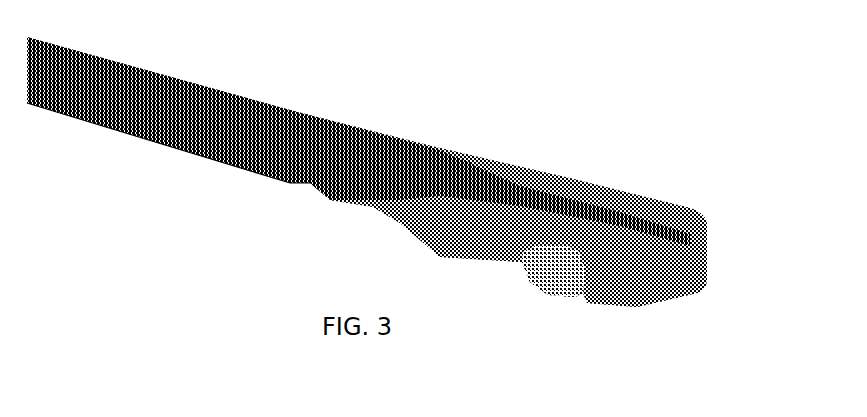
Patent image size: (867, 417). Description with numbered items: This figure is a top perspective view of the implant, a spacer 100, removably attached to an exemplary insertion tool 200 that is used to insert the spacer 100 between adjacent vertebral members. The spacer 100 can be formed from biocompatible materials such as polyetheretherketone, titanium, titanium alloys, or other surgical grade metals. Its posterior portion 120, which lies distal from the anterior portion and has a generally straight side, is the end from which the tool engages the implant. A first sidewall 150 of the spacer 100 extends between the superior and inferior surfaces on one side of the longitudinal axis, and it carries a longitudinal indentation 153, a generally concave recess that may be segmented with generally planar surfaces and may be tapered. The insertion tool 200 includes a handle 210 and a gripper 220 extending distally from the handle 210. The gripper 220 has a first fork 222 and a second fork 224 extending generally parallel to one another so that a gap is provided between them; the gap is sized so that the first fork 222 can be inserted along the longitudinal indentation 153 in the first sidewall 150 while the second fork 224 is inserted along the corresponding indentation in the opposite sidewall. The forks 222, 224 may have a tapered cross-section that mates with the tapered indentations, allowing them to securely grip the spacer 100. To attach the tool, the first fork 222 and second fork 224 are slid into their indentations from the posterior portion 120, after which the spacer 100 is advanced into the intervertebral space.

The spacer 100 is at (493, 173).
The posterior portion 120 is at (468, 172).
The first sidewall 150 is at (564, 293).
The longitudinal indentation 153 is at (608, 275).
The insertion tool 200 is at (318, 124).
The handle 210 is at (310, 183).
The gripper 220 is at (400, 219).
The first fork 222 is at (523, 260).
The second fork 224 is at (436, 170).